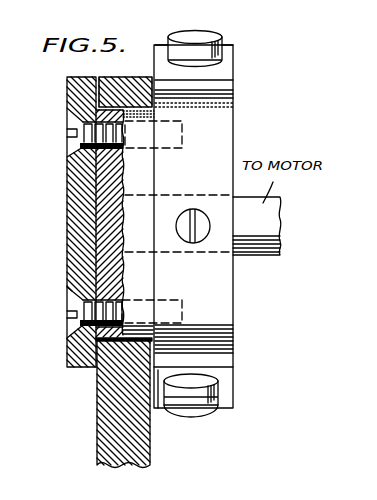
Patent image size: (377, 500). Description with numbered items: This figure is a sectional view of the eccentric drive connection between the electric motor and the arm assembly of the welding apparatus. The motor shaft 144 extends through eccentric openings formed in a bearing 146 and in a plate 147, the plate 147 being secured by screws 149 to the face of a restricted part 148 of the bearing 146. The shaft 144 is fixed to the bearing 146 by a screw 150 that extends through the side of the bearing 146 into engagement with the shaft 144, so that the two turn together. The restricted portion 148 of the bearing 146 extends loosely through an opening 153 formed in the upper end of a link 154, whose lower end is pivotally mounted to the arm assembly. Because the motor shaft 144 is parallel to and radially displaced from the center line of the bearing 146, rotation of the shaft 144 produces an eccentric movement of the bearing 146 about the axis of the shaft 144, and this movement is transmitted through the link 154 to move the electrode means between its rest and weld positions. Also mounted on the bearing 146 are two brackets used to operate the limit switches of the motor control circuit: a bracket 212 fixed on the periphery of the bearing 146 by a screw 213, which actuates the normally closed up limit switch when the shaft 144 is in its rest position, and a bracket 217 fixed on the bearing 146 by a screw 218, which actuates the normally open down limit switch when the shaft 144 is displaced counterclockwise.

The motor shaft 144 is at (267, 253).
The bearing 146 is at (220, 307).
The plate 147 is at (78, 215).
The restricted part of the bearing 148 is at (150, 277).
The screws 149 is at (72, 144).
The screw 150 is at (198, 213).
The opening 153 is at (127, 345).
The link 154 is at (110, 445).
The bracket 212 is at (227, 70).
The screw 213 is at (212, 42).
The bracket 217 is at (225, 385).
The screw 218 is at (198, 410).